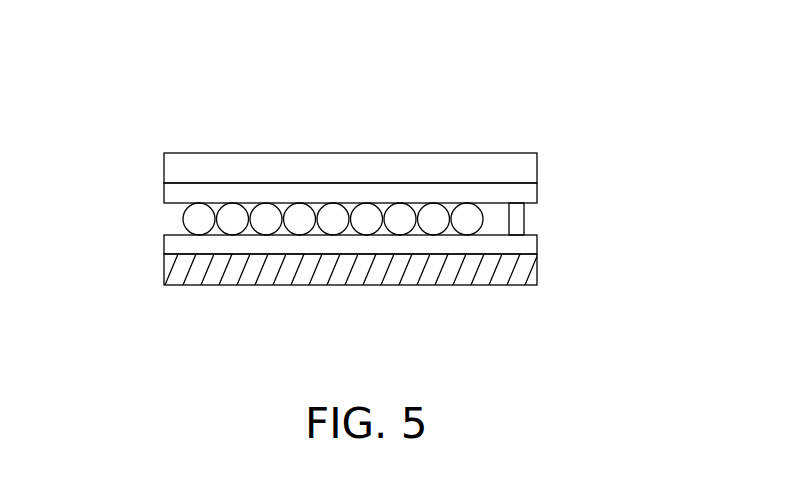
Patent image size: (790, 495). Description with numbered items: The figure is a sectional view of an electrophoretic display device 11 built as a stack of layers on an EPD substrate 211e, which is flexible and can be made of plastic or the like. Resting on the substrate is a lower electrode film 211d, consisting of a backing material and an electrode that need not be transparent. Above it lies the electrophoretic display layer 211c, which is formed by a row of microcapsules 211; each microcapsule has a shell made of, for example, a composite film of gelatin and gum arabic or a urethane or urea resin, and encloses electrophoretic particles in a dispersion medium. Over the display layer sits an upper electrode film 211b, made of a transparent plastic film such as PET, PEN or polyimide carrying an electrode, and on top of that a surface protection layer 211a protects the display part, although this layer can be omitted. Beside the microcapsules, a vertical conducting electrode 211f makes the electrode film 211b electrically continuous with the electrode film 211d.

The electrophoretic display device 11 is at (474, 101).
The microcapsule 211 is at (194, 212).
The surface protection layer 211a is at (525, 162).
The electrode film 211b is at (530, 192).
The electrophoretic display layer 211c is at (173, 220).
The electrode film 211d is at (527, 245).
The EPD substrate 211e is at (525, 272).
The vertical conducting electrode 211f is at (518, 218).